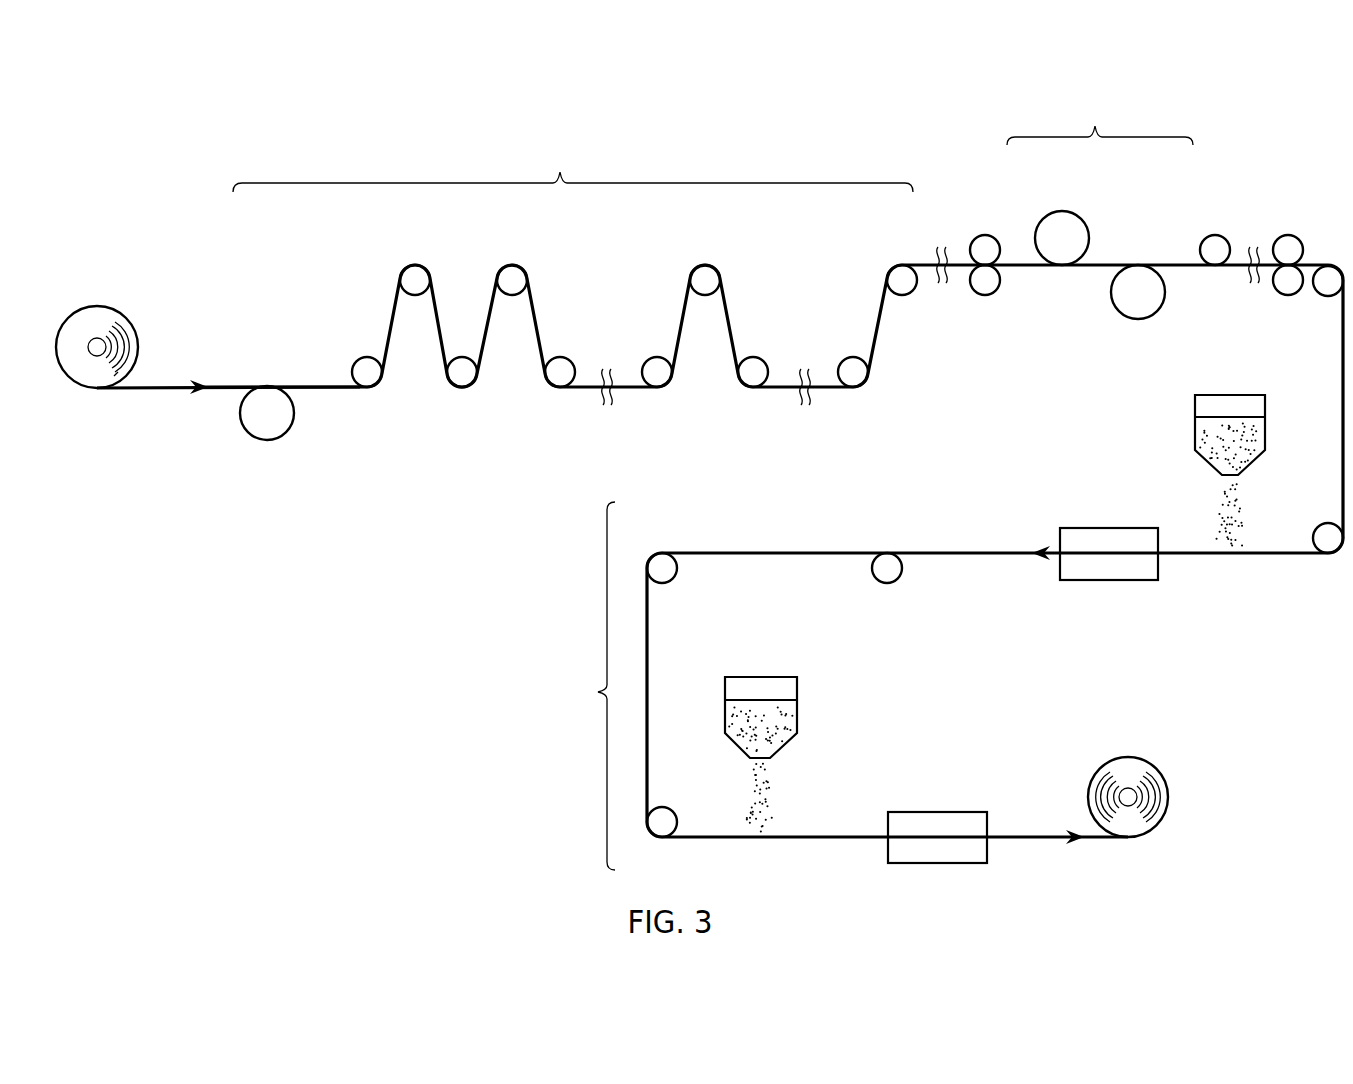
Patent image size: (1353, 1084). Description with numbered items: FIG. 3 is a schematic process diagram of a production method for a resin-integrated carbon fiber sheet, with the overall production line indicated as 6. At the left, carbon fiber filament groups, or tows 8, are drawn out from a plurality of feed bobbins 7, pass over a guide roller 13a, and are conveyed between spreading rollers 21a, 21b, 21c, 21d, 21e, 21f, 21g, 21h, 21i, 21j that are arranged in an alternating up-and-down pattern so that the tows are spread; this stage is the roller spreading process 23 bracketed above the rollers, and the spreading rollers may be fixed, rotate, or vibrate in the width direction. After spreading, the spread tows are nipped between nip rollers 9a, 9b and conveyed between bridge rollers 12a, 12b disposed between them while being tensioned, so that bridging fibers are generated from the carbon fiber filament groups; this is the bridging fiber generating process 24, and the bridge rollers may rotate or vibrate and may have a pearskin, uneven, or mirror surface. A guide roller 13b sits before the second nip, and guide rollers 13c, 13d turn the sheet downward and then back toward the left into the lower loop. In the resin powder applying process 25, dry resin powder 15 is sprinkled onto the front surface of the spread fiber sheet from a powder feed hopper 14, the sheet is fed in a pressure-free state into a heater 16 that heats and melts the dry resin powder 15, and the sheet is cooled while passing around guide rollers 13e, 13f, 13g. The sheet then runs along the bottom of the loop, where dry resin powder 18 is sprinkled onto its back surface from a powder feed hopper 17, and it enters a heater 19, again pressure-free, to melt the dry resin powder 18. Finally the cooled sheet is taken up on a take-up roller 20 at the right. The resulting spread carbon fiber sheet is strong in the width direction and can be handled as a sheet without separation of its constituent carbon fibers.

The manufacturing apparatus 6 is at (203, 152).
The feed bobbin 7 is at (97, 305).
The carbon fiber filament groups (tows) 8 is at (300, 384).
The nip roller 9a is at (985, 295).
The nip roller 9b is at (1288, 235).
The bridge roller 12a is at (1062, 211).
The bridge roller 12b is at (1138, 319).
The guide roller 13a is at (267, 441).
The guide roller 13b is at (1215, 235).
The guide roller 13c is at (1325, 296).
The guide roller 13d is at (1325, 525).
The guide roller 13e is at (887, 583).
The guide roller 13f is at (666, 583).
The guide roller 13g is at (664, 807).
The powder feed hopper 14 is at (1195, 400).
The dry resin powder 15 is at (1220, 498).
The heater 16 is at (1108, 528).
The powder feed hopper 17 is at (797, 687).
The dry resin powder 18 is at (770, 794).
The heater 19 is at (932, 812).
The take-up roller 20 is at (1128, 757).
The spreading roller 21a is at (359, 357).
The spreading roller 21b is at (415, 264).
The spreading roller 21c is at (462, 388).
The spreading roller 21d is at (512, 264).
The spreading roller 21e is at (552, 387).
The spreading roller 21f is at (666, 387).
The spreading roller 21g is at (706, 264).
The spreading roller 21h is at (746, 387).
The spreading roller 21i is at (860, 387).
The spreading roller 21j is at (891, 267).
The roller spreading process 23 is at (548, 165).
The bridging fiber generating process 24 is at (1083, 118).
The resin powder applying process 25 is at (563, 705).